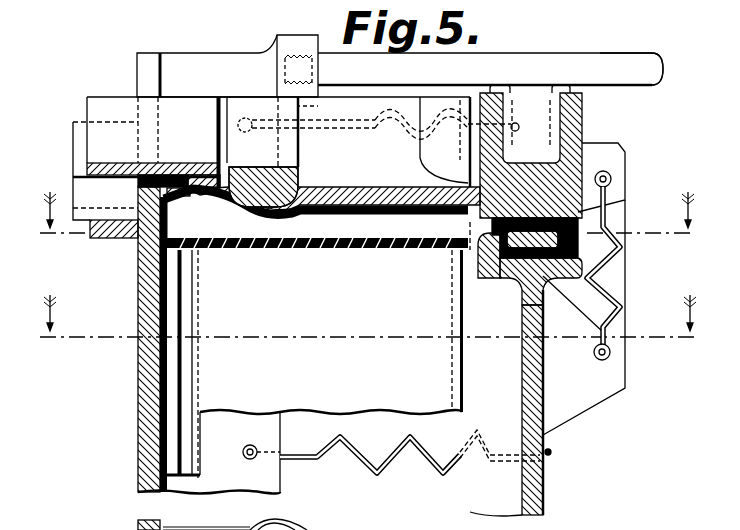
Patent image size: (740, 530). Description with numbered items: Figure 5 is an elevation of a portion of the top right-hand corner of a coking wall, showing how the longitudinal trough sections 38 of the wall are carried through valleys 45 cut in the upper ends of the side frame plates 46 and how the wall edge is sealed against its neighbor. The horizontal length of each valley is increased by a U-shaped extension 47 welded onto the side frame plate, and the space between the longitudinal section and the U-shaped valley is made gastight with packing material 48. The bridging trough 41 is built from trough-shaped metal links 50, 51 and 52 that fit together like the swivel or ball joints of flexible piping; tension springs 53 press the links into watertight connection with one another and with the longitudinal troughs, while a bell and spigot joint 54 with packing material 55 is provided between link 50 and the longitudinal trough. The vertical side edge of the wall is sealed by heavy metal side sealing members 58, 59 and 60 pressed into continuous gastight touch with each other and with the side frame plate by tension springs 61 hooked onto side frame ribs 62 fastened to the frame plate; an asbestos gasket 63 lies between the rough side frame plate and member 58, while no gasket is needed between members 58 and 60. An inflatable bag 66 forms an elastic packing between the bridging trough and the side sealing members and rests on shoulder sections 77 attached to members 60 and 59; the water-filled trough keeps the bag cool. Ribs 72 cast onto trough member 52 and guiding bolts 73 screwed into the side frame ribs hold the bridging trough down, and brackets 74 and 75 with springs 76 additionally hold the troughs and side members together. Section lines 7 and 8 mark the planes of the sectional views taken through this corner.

The section line 7- 7 is at (365, 326).
The section line 8- 8 is at (365, 218).
The longitudinal trough sections 38 is at (105, 163).
The bridging troughs 41 is at (582, 122).
The valleys 45 is at (142, 92).
The side frame plates 46 is at (138, 529).
The U-shaped extensions 47 is at (138, 245).
The packing material 48 is at (170, 173).
The metal link 50 is at (292, 153).
The metal link 51 is at (366, 188).
The metal link 52 is at (570, 162).
The tension springs 53 is at (435, 147).
The bell and spigot joint 54 is at (217, 210).
The packing material 55 is at (257, 157).
The side sealing member 58 is at (177, 400).
The side sealing member 59 is at (440, 373).
The side sealing member 60 is at (537, 500).
The tension springs 61 is at (391, 470).
The side frame ribs 62 is at (197, 62).
The asbestos gasket 63 is at (160, 427).
The inflatable bag 66 is at (512, 250).
The ribs 72 is at (560, 88).
The guiding bolts 73 is at (620, 62).
The bracket 74 is at (615, 190).
The bracket 75 is at (605, 387).
The springs 76 is at (613, 300).
The shoulder sections 77 is at (540, 283).